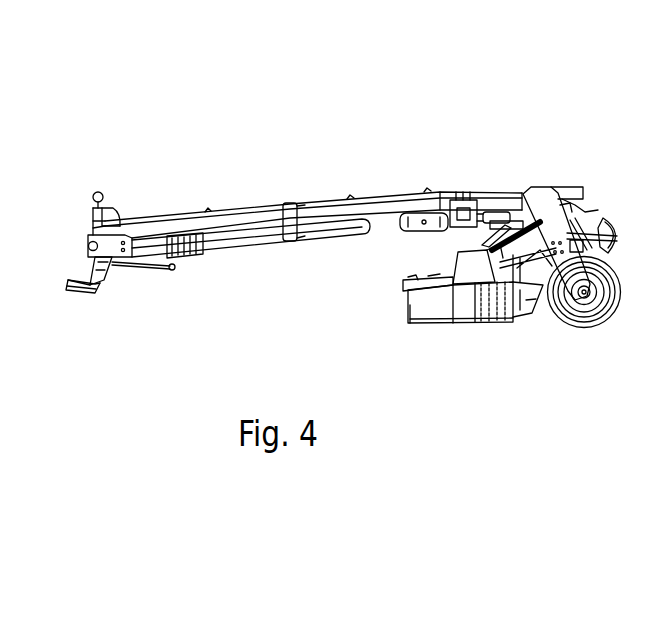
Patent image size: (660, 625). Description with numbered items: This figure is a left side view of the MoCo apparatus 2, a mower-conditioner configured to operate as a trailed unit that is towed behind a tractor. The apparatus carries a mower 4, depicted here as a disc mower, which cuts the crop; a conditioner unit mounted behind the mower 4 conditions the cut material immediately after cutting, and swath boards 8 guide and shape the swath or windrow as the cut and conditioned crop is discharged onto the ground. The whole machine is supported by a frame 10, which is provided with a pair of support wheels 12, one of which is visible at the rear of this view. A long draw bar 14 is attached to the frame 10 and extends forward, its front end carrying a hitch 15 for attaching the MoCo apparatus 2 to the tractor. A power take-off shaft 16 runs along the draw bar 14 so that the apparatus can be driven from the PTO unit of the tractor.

The MoCo apparatus 2 is at (478, 101).
The mower 4 is at (407, 306).
The swath boards 8 is at (462, 260).
The frame 10 is at (531, 187).
The support wheels 12 is at (597, 322).
The draw bar 14 is at (252, 214).
The hitch 15 is at (83, 234).
The power take-off (PTO) shaft 16 is at (236, 240).